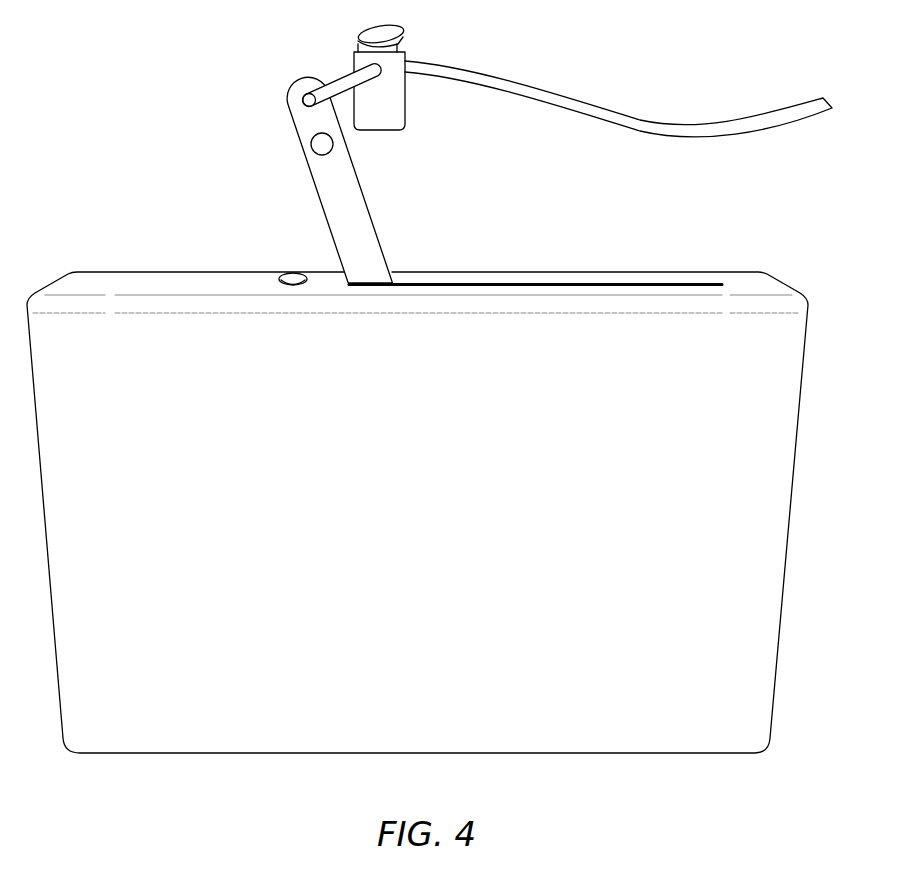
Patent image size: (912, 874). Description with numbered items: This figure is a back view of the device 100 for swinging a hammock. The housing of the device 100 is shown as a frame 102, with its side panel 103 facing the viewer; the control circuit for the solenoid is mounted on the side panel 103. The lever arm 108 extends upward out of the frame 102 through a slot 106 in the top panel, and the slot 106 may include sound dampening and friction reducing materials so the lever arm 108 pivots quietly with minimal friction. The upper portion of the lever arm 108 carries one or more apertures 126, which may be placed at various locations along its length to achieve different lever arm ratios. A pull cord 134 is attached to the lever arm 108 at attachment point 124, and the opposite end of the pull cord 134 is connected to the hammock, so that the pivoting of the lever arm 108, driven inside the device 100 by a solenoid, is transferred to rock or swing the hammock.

The device 100 is at (145, 113).
The frame 102 is at (785, 570).
The side panel 103 is at (433, 562).
The slot 106 is at (608, 285).
The lever arm 108 is at (367, 250).
The attachment point 124 is at (297, 112).
The apertures 126 is at (312, 152).
The pull cord 134 is at (547, 93).